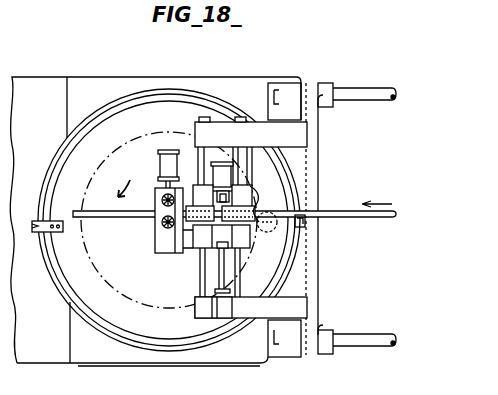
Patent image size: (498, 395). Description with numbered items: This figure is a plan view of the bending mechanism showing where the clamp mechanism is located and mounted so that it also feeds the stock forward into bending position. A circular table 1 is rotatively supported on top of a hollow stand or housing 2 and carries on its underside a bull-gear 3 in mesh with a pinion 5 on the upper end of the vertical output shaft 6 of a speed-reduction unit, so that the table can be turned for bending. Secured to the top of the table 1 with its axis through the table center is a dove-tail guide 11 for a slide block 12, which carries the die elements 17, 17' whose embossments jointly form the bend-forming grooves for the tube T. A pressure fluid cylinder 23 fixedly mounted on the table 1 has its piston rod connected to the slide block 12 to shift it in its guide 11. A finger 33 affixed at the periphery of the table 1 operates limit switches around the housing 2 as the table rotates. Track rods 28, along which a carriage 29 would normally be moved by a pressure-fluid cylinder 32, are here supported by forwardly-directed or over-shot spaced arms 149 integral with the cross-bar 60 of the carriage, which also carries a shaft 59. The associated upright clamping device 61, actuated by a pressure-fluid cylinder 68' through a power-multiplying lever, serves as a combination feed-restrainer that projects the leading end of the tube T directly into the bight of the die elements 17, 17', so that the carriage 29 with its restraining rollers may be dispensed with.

The circular table 1 is at (75, 157).
The hollow stand or housing 2 is at (72, 103).
The bull-gear 3 is at (133, 143).
The pinion 5 is at (268, 233).
The vertical output shaft 6 is at (295, 229).
The dove-tail guide 11 is at (172, 256).
The slide block 12 is at (170, 237).
The die elements 17 is at (149, 224).
The die elements 17' is at (146, 194).
The pressure fluid cylinder 23 is at (165, 150).
The track rods 28 is at (238, 116).
The carriage 29 is at (199, 250).
The pressure-fluid cylinder 32 is at (225, 306).
The finger 33 is at (37, 233).
The shaft 59 is at (373, 92).
The cross-bar 60 is at (318, 165).
The clamping device 61 is at (258, 196).
The pressure-fluid cylinder 68' is at (220, 174).
The spaced arms 149 is at (251, 220).
The tube T is at (101, 217).